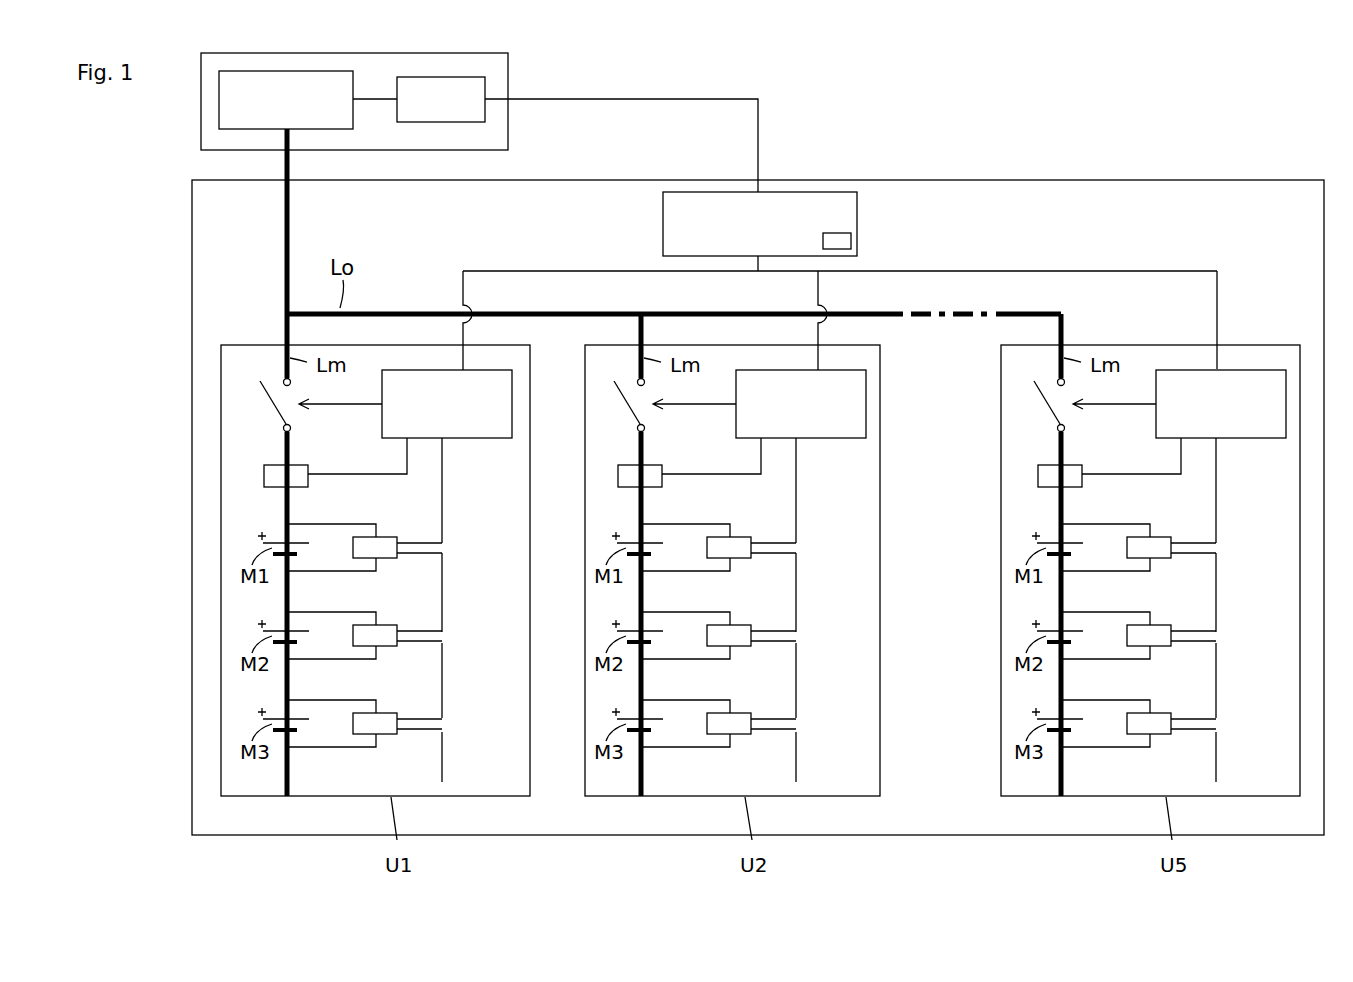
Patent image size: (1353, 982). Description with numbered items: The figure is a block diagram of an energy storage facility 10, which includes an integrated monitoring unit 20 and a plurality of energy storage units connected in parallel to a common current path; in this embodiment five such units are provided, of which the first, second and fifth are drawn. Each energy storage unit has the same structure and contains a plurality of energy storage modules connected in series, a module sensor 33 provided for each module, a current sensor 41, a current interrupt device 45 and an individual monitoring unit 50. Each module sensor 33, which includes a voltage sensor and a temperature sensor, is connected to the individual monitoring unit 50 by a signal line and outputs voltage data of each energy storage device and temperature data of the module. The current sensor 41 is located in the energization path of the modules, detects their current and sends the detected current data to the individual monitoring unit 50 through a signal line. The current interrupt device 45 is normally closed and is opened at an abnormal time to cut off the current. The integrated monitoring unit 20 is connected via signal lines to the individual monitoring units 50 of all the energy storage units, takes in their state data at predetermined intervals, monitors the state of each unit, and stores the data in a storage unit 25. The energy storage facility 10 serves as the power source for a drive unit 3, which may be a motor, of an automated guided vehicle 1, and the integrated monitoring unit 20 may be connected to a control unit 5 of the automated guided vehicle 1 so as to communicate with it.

The automated guided vehicle 1 is at (508, 78).
The drive unit 3 is at (219, 99).
The control unit 5 is at (468, 122).
The energy storage facility 10 is at (1021, 180).
The integrated monitoring unit 20 is at (857, 215).
The storage unit 25 is at (838, 241).
The module sensor 33 is at (386, 543).
The current sensor 41 is at (295, 465).
The current interrupt device 45 is at (267, 400).
The individual monitoring unit 50 is at (475, 430).